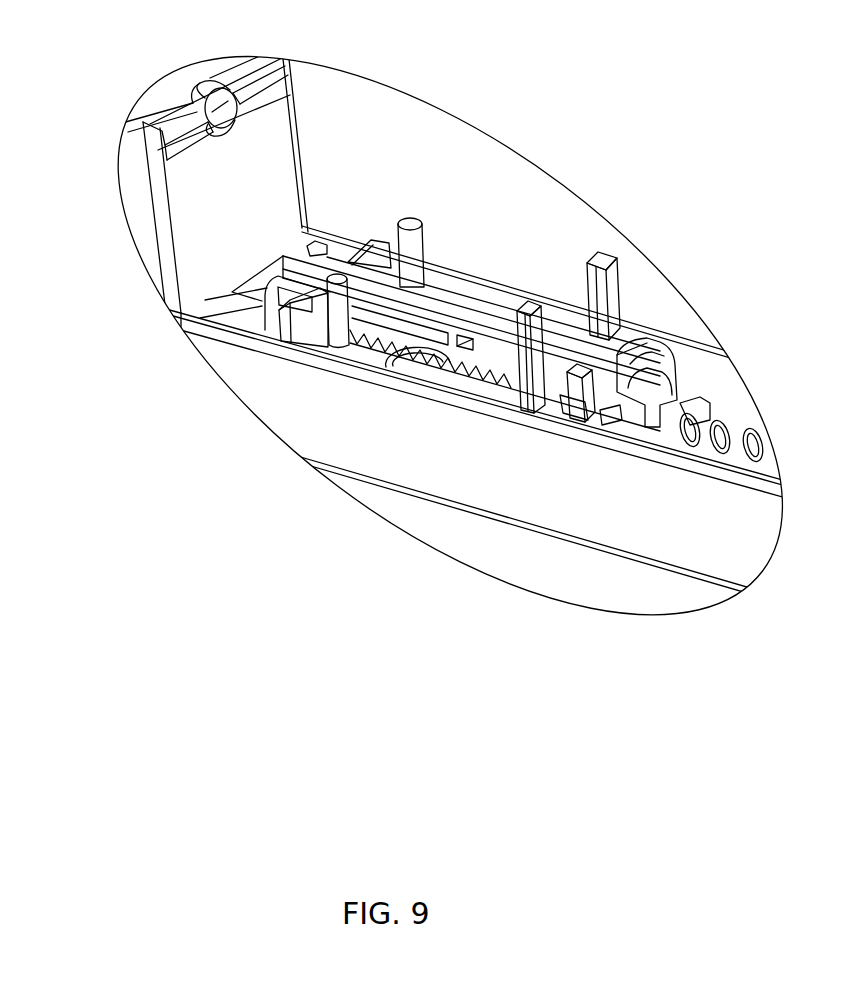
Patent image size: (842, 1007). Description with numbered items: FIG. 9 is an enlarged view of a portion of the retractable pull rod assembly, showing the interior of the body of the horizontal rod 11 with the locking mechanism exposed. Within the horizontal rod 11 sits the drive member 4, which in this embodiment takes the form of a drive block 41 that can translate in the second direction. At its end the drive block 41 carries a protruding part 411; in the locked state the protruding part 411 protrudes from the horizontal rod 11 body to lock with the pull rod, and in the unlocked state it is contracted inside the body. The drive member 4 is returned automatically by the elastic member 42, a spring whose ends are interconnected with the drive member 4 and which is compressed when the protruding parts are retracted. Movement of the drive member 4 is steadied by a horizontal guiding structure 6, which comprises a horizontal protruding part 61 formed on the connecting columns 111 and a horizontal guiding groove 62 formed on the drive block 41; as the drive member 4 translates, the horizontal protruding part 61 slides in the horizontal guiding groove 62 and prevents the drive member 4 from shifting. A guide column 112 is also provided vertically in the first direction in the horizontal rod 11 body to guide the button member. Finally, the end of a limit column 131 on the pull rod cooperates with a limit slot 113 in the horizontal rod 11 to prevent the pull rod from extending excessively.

The horizontal rod 11 is at (185, 245).
The limit column 131 is at (213, 111).
The limit slot 113 is at (290, 105).
The drive member 4 is at (475, 305).
The protruding part 411 is at (258, 318).
The horizontal guiding structure 6 is at (470, 347).
The horizontal guiding groove 62 is at (508, 357).
The guide column 112 is at (607, 272).
The connecting columns 111 is at (573, 400).
The drive block 41 is at (652, 362).
The elastic member 42 is at (727, 412).
The horizontal protruding part 61 is at (597, 380).